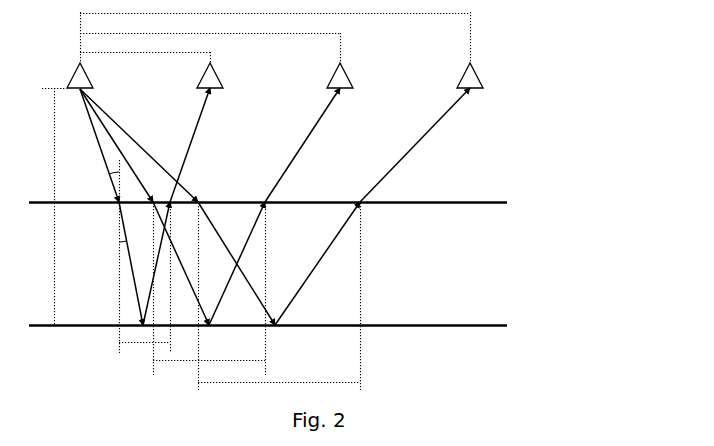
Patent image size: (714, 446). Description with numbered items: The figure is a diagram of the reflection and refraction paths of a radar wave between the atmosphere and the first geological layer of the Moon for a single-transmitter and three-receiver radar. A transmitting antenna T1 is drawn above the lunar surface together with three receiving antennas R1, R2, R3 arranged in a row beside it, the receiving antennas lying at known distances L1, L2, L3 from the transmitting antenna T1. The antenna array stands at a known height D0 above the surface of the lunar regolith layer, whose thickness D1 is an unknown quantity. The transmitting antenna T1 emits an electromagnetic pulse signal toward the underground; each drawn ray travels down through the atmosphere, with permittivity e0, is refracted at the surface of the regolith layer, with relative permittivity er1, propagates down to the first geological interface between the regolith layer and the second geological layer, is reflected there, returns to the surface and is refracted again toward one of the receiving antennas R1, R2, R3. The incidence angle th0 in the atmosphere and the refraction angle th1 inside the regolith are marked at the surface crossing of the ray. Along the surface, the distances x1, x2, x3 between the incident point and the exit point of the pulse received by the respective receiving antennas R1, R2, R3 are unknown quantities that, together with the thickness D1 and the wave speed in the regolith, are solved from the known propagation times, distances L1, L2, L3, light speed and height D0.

The transmitting antenna T1 is at (67, 76).
The first receiving antenna R1 is at (199, 76).
The second receiving antenna R2 is at (329, 76).
The third receiving antenna R3 is at (459, 76).
The distance between transmitting antenna and first receiving antenna L1 is at (145, 50).
The distance between transmitting antenna and second receiving antenna L2 is at (210, 42).
The distance between transmitting antenna and third receiving antenna L3 is at (275, 32).
The distance from antenna array to surface of lunar regolith layer D0 is at (42, 145).
The thickness of lunar regolith layer D1 is at (42, 264).
The distance between incident point and exit point for first receiving antenna x1 is at (145, 261).
The distance between incident point and exit point for second receiving antenna x2 is at (209, 289).
The distance between incident point and exit point for third receiving antenna x3 is at (279, 302).
The incidence angle in atmosphere th0 is at (112, 171).
The refraction angle in first layer th1 is at (121, 244).
The permittivity of atmosphere (vacuum) e0 is at (317, 177).
The relative permittivity of first geological layer er1 is at (305, 292).